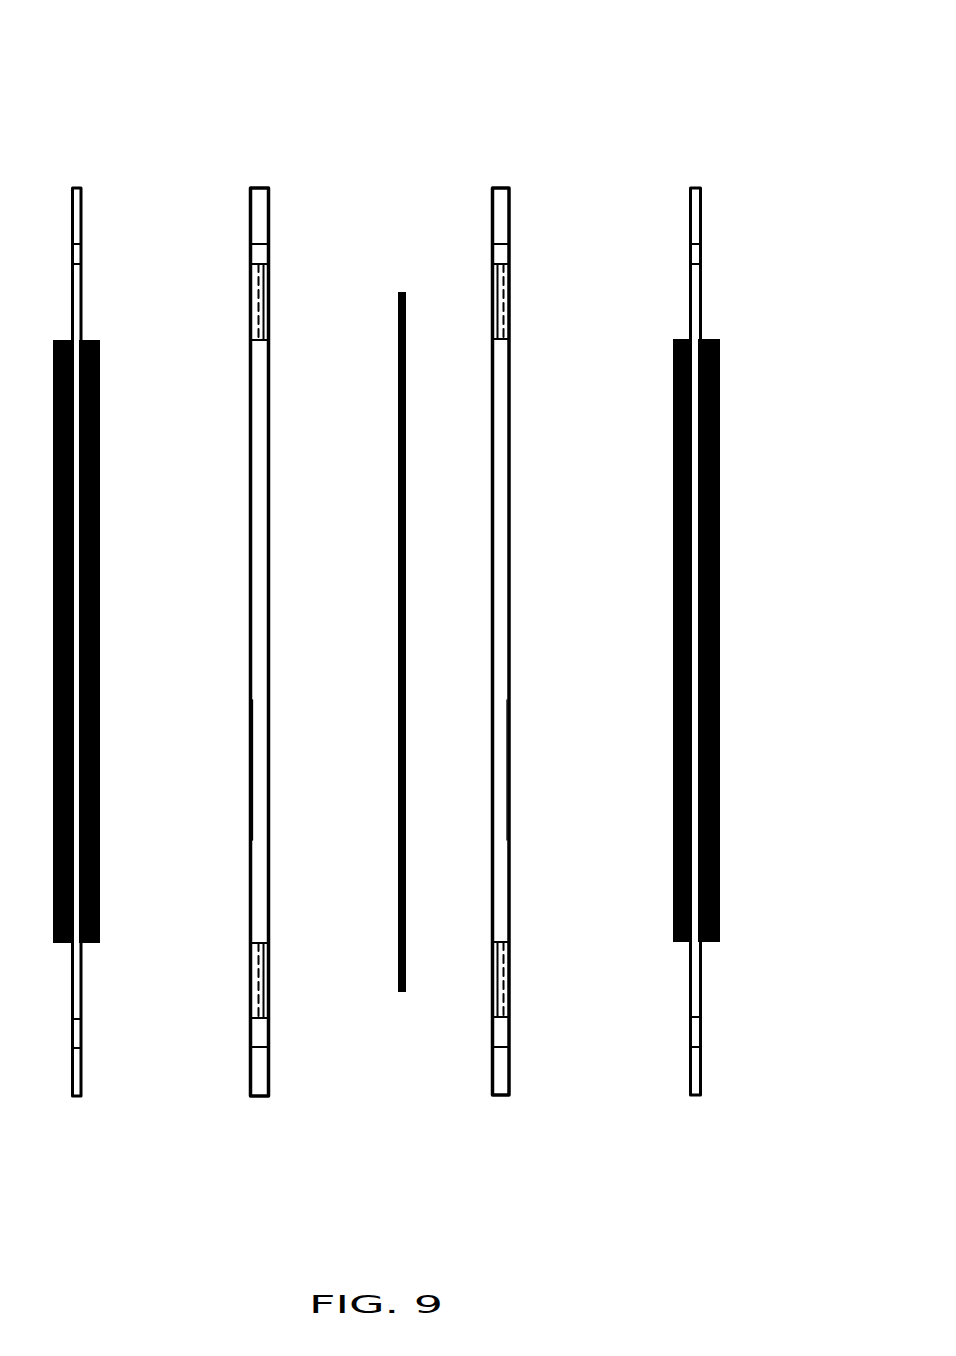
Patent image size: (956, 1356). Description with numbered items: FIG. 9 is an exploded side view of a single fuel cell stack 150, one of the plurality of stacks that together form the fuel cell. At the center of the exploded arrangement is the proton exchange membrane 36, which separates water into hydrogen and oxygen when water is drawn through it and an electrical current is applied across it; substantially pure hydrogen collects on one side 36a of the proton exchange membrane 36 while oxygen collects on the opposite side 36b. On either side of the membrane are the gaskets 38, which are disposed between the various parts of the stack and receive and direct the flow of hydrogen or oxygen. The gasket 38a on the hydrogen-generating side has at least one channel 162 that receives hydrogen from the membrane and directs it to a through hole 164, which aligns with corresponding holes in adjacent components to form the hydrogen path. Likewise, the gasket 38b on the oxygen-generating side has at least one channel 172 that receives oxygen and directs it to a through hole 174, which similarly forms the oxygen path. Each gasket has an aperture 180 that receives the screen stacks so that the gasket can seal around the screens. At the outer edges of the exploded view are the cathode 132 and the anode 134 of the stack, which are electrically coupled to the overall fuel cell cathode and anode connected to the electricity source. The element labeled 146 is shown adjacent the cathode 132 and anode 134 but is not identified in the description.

The fuel cell stack 150 is at (142, 52).
The gaskets 38 is at (267, 152).
The gasket 38a is at (258, 1097).
The gasket 38b is at (500, 1095).
The proton exchange membrane 36 is at (404, 292).
The side 36a is at (398, 395).
The opposite side 36b is at (406, 478).
The cathode 132 is at (93, 338).
The anode 134 is at (676, 339).
The magnet blocks 146 is at (100, 578).
The channel 162 is at (254, 290).
The through hole 164 is at (259, 260).
The channel 172 is at (513, 303).
The through hole 174 is at (513, 243).
The aperture 180 is at (257, 756).